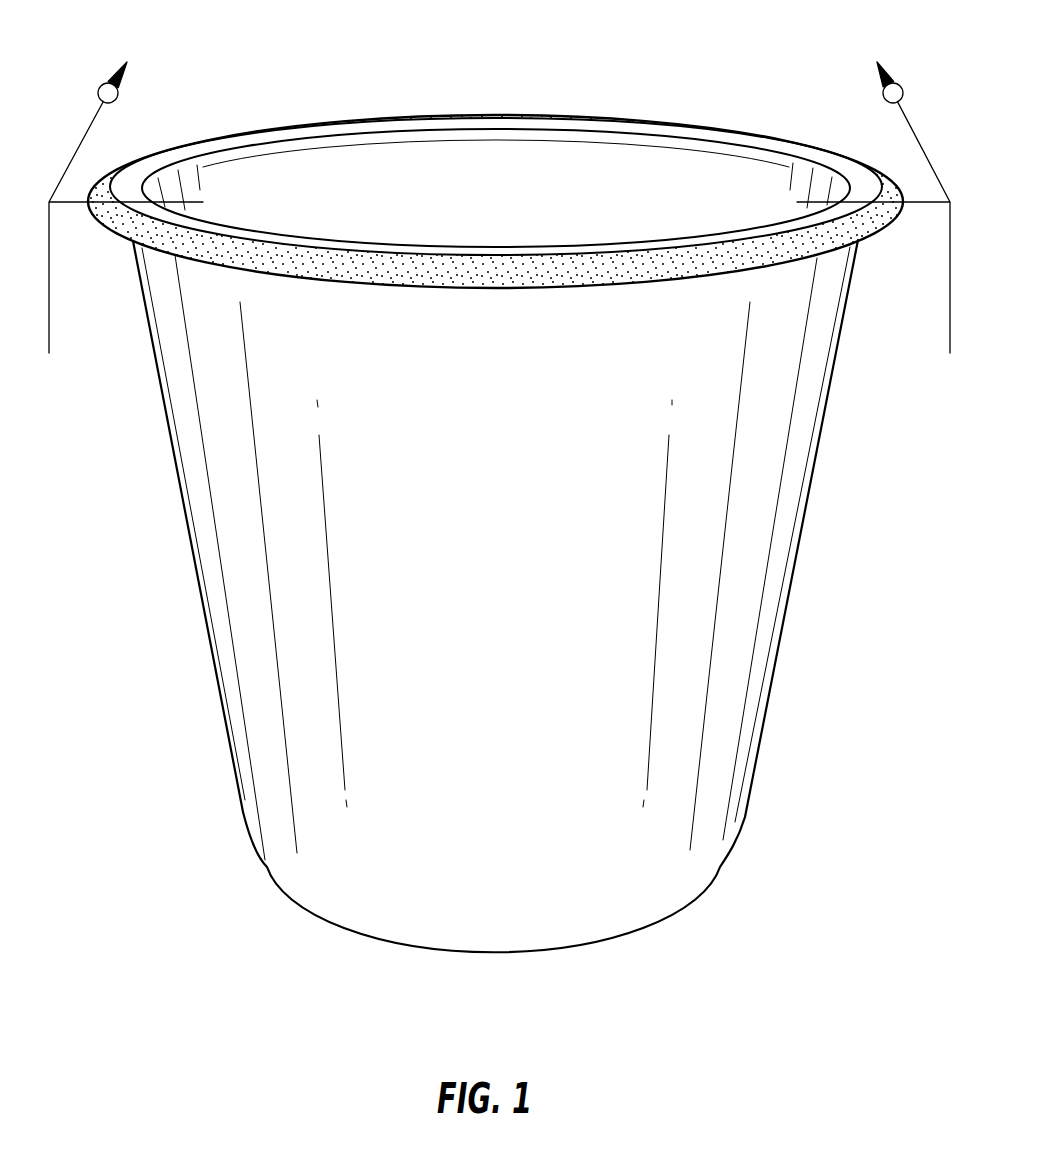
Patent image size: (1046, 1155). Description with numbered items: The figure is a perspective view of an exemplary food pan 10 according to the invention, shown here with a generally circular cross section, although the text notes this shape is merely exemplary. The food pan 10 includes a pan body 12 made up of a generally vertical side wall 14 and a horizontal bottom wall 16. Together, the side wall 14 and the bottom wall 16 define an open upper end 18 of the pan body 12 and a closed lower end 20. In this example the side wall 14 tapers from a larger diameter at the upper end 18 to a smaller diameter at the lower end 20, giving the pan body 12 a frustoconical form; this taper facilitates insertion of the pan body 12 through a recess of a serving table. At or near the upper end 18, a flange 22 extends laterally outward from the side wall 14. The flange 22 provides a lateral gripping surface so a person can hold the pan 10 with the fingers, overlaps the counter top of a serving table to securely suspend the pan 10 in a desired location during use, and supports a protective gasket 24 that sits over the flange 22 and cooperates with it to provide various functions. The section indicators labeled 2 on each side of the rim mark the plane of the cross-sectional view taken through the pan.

The section line 2- 2 is at (499, 200).
The food pan 10 is at (479, 507).
The pan body 12 is at (508, 600).
The side wall 14 is at (782, 532).
The bottom wall 16 is at (647, 922).
The open upper end 18 is at (495, 217).
The closed lower end 20 is at (763, 843).
The flange 22 is at (130, 180).
The gasket 24 is at (530, 272).